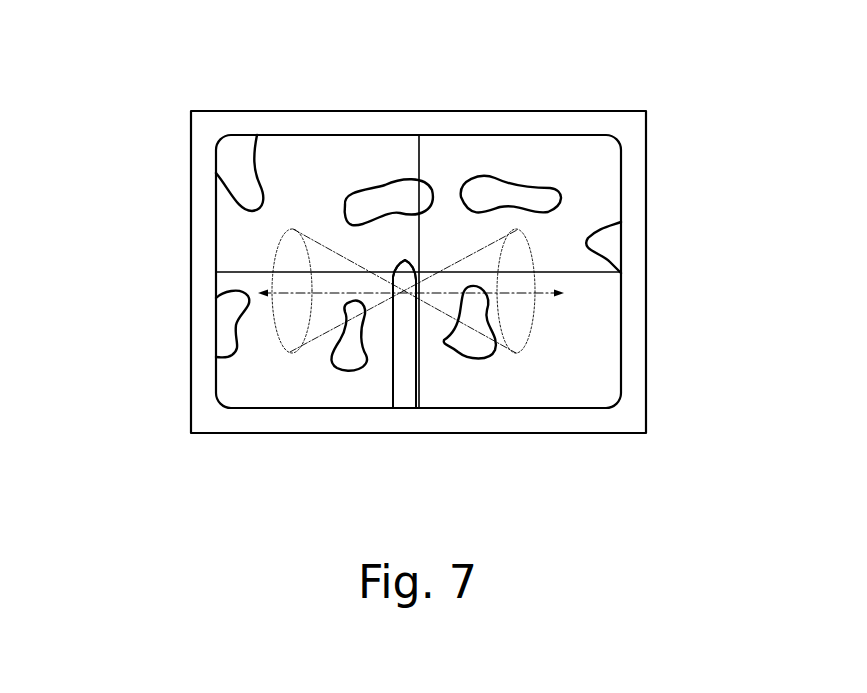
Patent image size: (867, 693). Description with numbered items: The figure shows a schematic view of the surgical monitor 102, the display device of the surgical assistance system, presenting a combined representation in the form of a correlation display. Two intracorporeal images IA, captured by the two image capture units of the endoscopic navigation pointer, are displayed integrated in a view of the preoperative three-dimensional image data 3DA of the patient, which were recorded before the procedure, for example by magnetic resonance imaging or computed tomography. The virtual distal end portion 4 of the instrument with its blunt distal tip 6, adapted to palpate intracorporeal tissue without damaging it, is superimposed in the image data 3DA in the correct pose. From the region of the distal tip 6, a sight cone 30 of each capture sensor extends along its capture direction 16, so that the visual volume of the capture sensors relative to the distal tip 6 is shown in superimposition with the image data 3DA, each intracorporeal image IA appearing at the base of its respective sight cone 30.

The surgical monitor 102 is at (202, 123).
The 3D image data 3DA is at (602, 185).
The distal end portion 4 is at (405, 357).
The distal tip 6 is at (406, 260).
The sight cone 30 is at (277, 261).
The capture direction 16 is at (258, 293).
The intracorporeal image IA is at (283, 323).